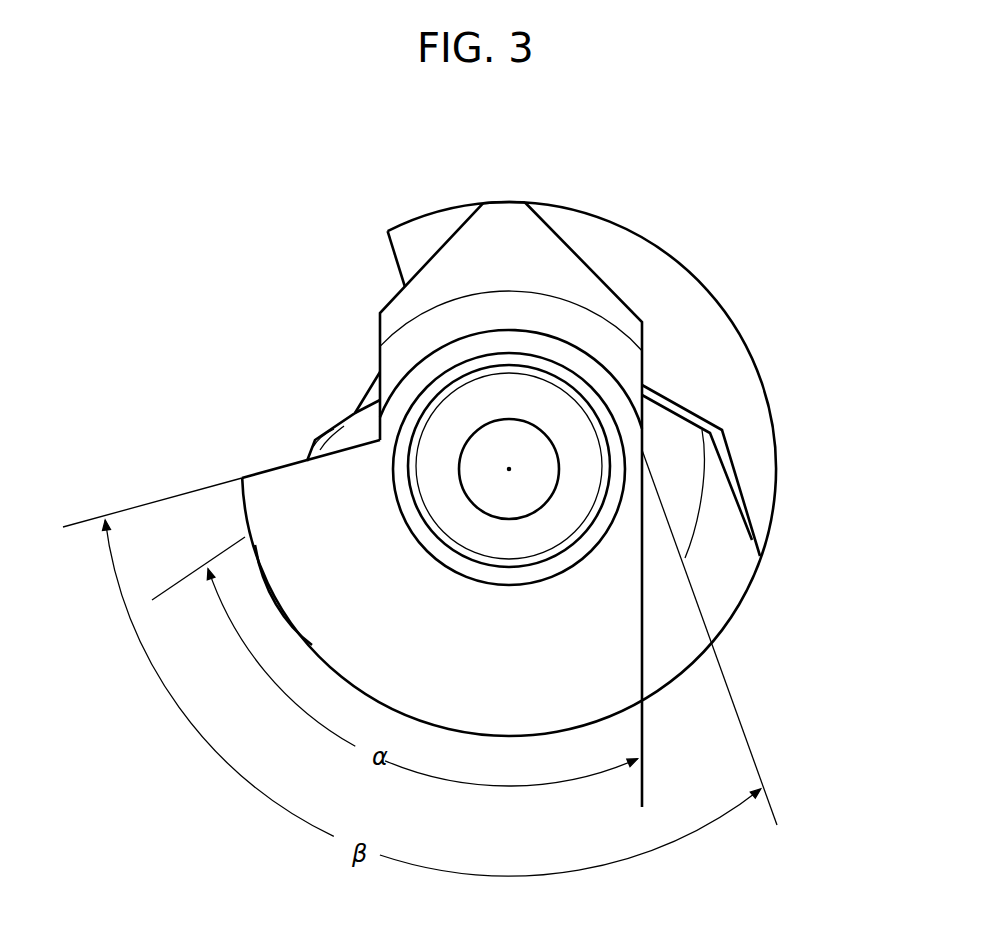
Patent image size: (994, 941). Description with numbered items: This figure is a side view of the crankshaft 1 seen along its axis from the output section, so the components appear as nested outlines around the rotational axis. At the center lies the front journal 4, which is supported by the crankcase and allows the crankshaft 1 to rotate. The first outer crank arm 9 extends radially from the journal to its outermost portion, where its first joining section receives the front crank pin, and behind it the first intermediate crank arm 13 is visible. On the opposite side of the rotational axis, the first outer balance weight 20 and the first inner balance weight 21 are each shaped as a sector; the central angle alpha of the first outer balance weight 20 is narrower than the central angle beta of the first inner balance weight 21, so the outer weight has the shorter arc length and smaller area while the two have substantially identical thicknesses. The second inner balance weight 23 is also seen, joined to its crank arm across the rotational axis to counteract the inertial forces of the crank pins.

The crankshaft 1 is at (830, 248).
The front journal 4 is at (438, 443).
The first outer crank arm 9 is at (512, 218).
The first intermediate crank arm 13 is at (722, 588).
The first outer balance weight 20 is at (298, 532).
The first inner balance weight 21 is at (676, 655).
The second inner balance weight 23 is at (728, 333).